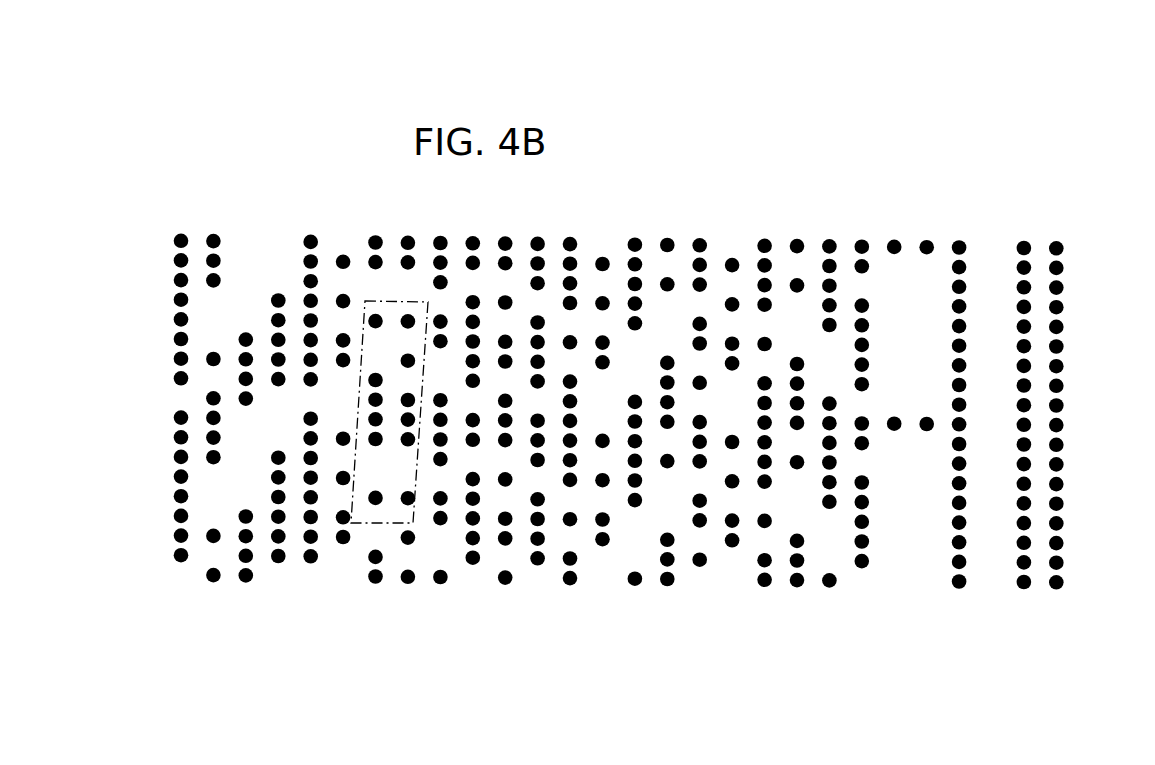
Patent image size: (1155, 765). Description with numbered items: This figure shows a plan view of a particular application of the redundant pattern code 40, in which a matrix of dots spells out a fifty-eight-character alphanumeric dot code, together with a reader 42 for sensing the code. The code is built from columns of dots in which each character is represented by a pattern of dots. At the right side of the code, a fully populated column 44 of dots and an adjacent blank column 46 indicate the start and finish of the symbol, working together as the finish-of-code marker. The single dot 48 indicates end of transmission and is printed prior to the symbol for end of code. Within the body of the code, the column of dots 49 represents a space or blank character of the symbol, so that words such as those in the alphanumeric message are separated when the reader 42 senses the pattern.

The redundant pattern code 40 is at (653, 405).
The reader 42 is at (362, 523).
The fully populated column 44 is at (1022, 583).
The blank column 46 is at (987, 583).
The single dot 48 is at (928, 243).
The column of dots 49 is at (601, 541).